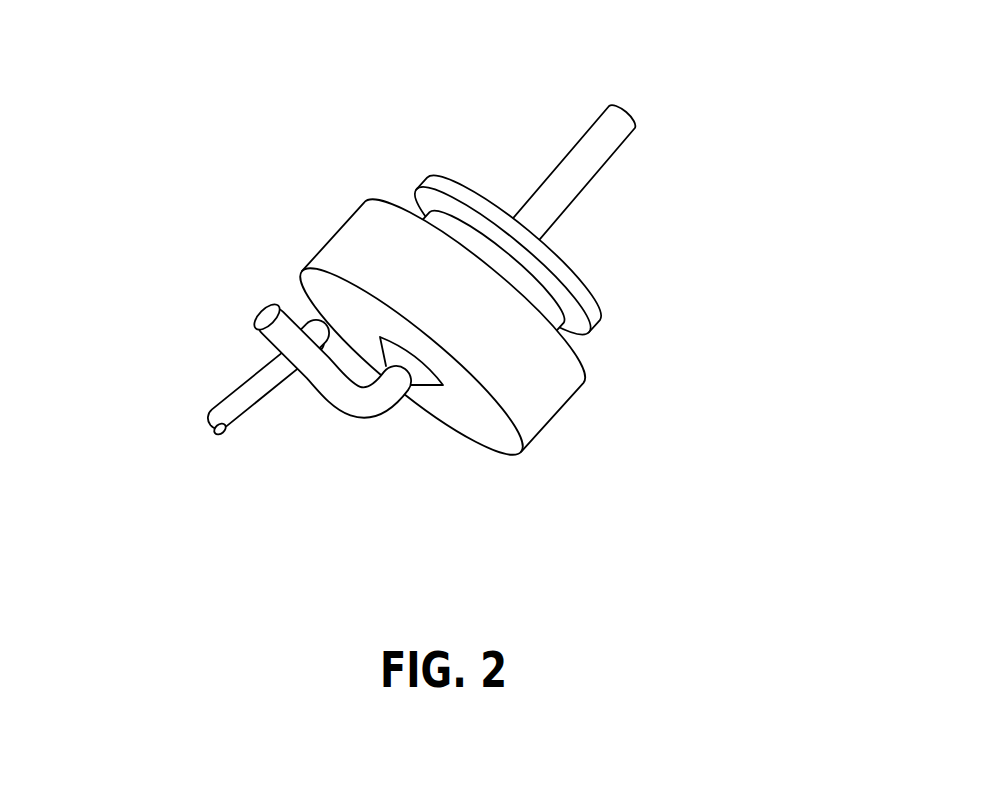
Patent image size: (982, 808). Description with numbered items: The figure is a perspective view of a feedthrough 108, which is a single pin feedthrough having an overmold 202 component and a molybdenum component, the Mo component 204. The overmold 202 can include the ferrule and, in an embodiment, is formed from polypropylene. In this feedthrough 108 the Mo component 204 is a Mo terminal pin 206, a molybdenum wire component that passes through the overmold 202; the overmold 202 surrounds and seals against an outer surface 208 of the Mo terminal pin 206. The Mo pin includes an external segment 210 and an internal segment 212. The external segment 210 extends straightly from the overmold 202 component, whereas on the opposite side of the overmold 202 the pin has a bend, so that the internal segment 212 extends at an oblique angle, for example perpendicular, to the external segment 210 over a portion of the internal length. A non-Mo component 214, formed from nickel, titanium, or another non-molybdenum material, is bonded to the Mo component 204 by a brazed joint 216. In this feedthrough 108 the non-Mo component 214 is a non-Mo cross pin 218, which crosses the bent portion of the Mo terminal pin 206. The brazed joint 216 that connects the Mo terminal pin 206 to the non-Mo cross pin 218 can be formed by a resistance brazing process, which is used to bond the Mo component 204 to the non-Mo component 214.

The feedthrough 108 is at (382, 112).
The overmold 202 is at (545, 405).
The Mo component 204 is at (305, 388).
The Mo terminal pin 206 is at (411, 361).
The outer surface 208 is at (595, 140).
The external segment 210 is at (604, 181).
The internal segment 212 is at (352, 422).
The non-Mo component 214 is at (235, 386).
The brazed joint 216 is at (296, 310).
The non-Mo cross pin 218 is at (262, 389).